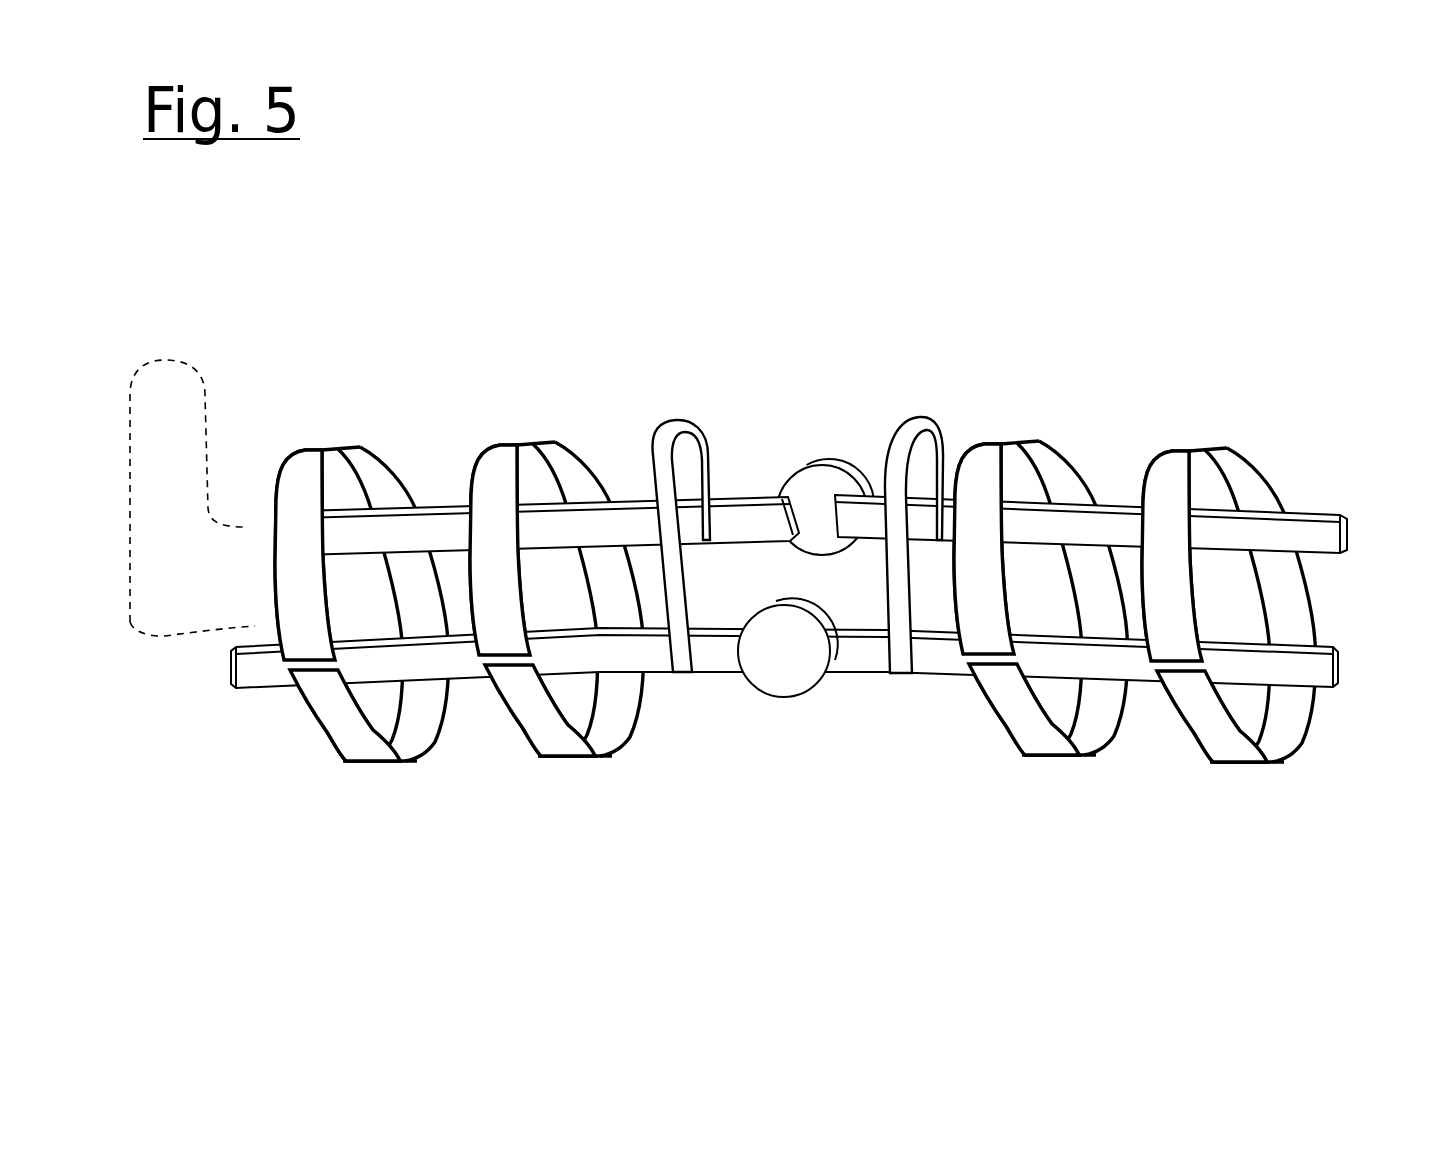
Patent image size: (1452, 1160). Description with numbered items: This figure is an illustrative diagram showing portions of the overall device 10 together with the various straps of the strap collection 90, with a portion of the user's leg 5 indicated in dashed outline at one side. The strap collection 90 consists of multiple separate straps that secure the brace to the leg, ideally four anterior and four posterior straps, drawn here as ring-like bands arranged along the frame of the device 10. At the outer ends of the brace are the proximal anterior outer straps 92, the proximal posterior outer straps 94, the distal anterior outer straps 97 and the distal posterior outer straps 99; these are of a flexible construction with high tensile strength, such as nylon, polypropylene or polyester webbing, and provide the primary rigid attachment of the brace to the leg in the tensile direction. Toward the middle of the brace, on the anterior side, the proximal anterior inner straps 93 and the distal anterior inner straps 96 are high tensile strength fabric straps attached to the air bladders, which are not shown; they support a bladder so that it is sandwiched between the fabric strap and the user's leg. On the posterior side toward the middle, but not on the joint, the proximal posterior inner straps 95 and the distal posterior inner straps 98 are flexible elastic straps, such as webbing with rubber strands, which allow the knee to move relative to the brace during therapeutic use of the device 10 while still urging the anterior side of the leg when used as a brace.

The leg 5 is at (233, 583).
The overall device 10 is at (1260, 207).
The strap collection 90 is at (772, 560).
The proximal anterior outer straps 92 is at (1236, 455).
The proximal anterior inner straps 93 is at (1028, 445).
The proximal posterior outer straps 94 is at (1216, 745).
The proximal posterior inner straps 95 is at (1027, 760).
The distal anterior inner straps 96 is at (557, 438).
The distal anterior outer straps 97 is at (319, 450).
The distal posterior inner straps 98 is at (566, 760).
The distal posterior outer straps 99 is at (359, 746).